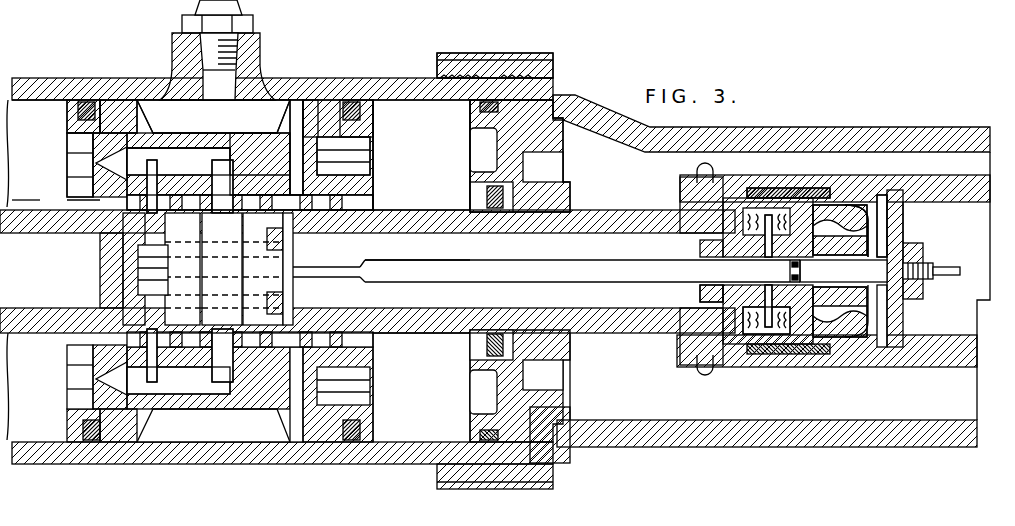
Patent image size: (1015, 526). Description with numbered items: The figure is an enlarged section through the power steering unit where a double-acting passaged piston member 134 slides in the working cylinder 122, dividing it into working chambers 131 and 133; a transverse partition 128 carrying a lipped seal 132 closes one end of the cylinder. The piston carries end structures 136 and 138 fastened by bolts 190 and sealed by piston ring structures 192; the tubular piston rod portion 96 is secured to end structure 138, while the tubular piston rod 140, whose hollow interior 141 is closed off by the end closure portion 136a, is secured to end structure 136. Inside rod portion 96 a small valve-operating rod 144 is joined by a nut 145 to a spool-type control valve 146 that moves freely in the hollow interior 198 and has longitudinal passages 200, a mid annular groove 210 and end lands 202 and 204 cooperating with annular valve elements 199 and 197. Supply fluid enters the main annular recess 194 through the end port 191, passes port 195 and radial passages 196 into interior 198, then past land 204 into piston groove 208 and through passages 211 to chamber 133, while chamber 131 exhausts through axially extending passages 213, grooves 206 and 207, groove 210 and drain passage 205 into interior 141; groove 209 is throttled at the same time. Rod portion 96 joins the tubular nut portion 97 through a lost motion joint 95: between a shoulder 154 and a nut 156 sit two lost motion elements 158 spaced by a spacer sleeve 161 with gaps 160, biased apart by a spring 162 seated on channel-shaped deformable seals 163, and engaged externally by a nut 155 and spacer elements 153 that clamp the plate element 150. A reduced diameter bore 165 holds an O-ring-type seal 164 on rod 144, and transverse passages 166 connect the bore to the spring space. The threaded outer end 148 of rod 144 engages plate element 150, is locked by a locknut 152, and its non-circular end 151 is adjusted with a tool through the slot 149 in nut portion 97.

The lost motion joint 95 is at (793, 175).
The tubular piston rod portion 96 is at (380, 212).
The tubular nut portion 97 is at (907, 367).
The working cylinder 122 is at (432, 440).
The transverse partition 128 is at (555, 97).
The working chamber 131 is at (47, 134).
The lipped seal 132 is at (517, 187).
The working chamber 133 is at (438, 378).
The piston member 134 is at (150, 133).
The piston end structure 136 is at (112, 100).
The end closure portion 136a is at (75, 240).
The piston end structure 138 is at (333, 113).
The tubular piston rod 140 is at (20, 178).
The hollow interior 141 is at (33, 280).
The valve-operating rod 144 is at (417, 260).
The nut 145 is at (188, 255).
The spool-type control valve 146 is at (270, 290).
The threaded outer end 148 is at (876, 195).
The slot 149 is at (995, 327).
The plate element 150 is at (915, 195).
The non-circular end 151 is at (955, 279).
The locknut 152 is at (912, 243).
The spacer elements 153 is at (850, 350).
The shoulder 154 is at (690, 226).
The nut 155 is at (700, 360).
The nut 156 is at (822, 198).
The lost motion elements 158 is at (740, 200).
The gaps 160 is at (793, 345).
The spacer sleeve 161 is at (745, 325).
The spring 162 is at (757, 345).
The deformable seals 163 is at (725, 230).
The O-ring-type seal 164 is at (826, 224).
The reduced diameter bore 165 is at (818, 282).
The transverse passages 166 is at (712, 258).
The bolts 190 is at (67, 155).
The end port 191 is at (207, 97).
The piston ring structure 192 is at (93, 440).
The main annular recess 194 is at (148, 135).
The port 195 is at (296, 133).
The radial passages 196 is at (330, 137).
The annular valve element 197 is at (380, 283).
The hollow interior 198 is at (222, 376).
The annular valve element 199 is at (125, 215).
The longitudinally extending passages 200 is at (138, 265).
The end land 202 is at (163, 383).
The end land 204 is at (253, 370).
The drain passage 205 is at (232, 160).
The piston groove 206 is at (158, 200).
The annular groove 207 is at (188, 205).
The piston groove 208 is at (303, 160).
The annular groove 209 is at (232, 195).
The annular groove 210 is at (222, 230).
The passages 211 is at (358, 200).
The axially extending passages 213 is at (100, 200).